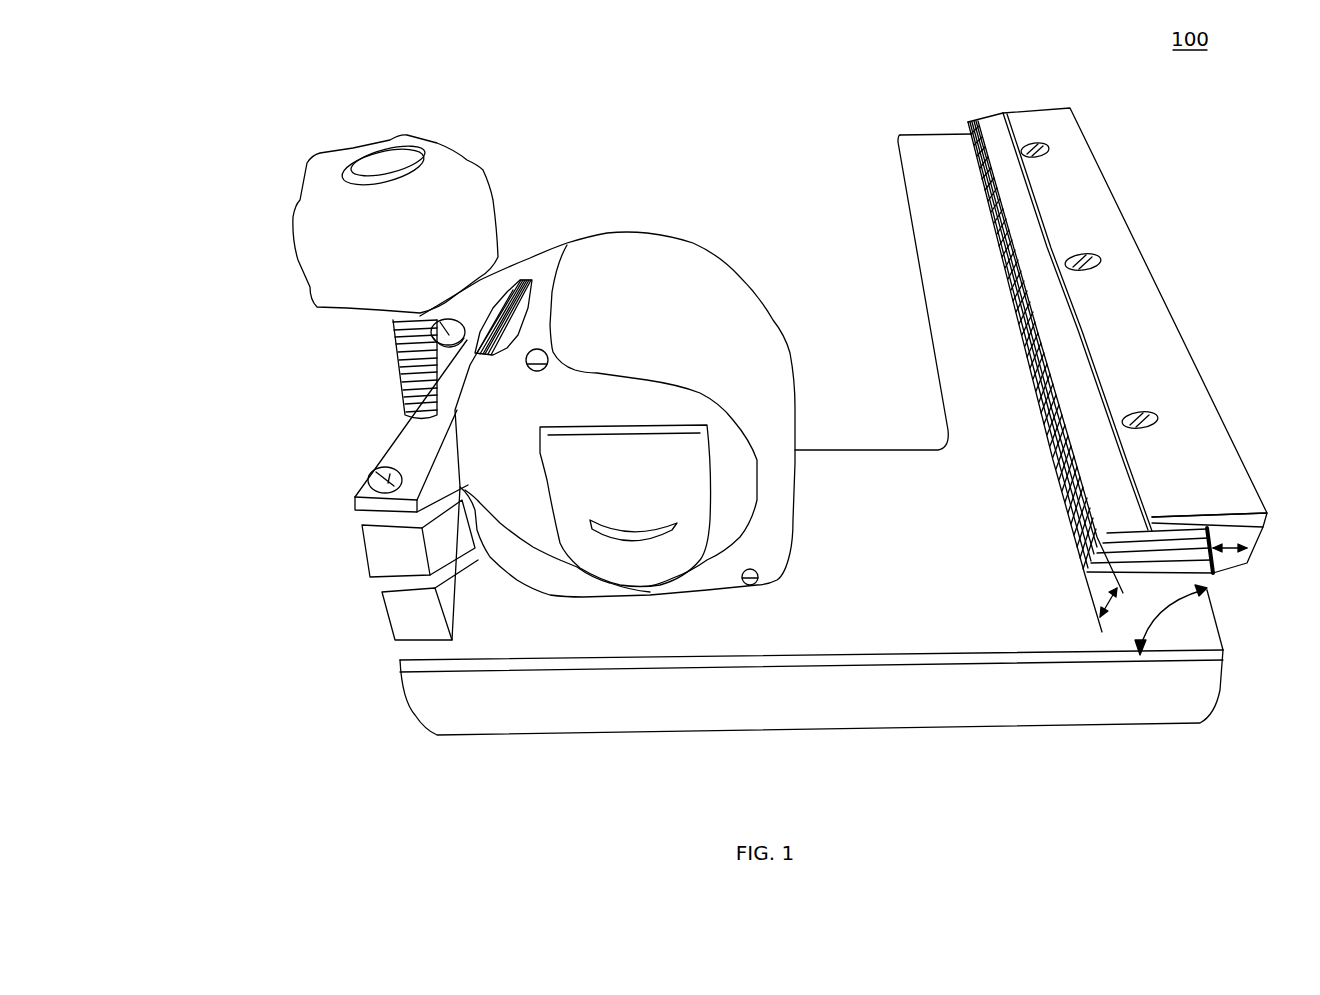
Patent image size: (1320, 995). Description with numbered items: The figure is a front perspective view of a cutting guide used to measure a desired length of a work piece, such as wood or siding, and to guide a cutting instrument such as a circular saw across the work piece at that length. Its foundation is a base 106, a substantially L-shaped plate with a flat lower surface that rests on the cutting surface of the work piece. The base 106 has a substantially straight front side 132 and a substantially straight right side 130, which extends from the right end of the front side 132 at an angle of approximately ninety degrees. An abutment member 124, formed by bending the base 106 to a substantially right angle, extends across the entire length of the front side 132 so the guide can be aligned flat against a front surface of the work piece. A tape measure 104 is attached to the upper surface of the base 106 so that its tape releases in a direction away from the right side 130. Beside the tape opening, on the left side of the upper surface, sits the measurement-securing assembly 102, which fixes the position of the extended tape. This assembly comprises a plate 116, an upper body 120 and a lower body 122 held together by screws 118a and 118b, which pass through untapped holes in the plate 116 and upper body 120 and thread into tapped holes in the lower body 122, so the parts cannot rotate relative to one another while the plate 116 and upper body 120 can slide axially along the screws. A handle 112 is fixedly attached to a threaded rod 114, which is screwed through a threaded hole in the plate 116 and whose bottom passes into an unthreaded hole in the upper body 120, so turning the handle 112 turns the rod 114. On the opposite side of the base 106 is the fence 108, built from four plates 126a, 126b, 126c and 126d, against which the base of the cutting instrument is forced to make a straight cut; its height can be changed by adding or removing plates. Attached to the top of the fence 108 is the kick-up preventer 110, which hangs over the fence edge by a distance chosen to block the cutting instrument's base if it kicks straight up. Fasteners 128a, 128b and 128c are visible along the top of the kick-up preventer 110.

The measurement-securing assembly 102 is at (376, 118).
The tape measure 104 is at (632, 212).
The base 106 is at (908, 122).
The fence 108 is at (986, 111).
The kick-up preventer 110 is at (1052, 104).
The handle 112 is at (293, 205).
The threaded rod 114 is at (400, 363).
The plate 116 is at (388, 427).
The screw 118a is at (448, 320).
The screw 118b is at (377, 470).
The upper body 120 is at (362, 540).
The lower body 122 is at (383, 610).
The abutment member 124 is at (405, 700).
The plate 126a is at (1077, 467).
The plate 126b is at (1080, 492).
The plate 126c is at (1080, 518).
The plate 126d is at (1080, 545).
The screw 128a is at (1040, 146).
The screw 128b is at (1090, 260).
The screw 128c is at (1150, 418).
The right side 130 is at (1223, 630).
The front side 132 is at (1065, 650).